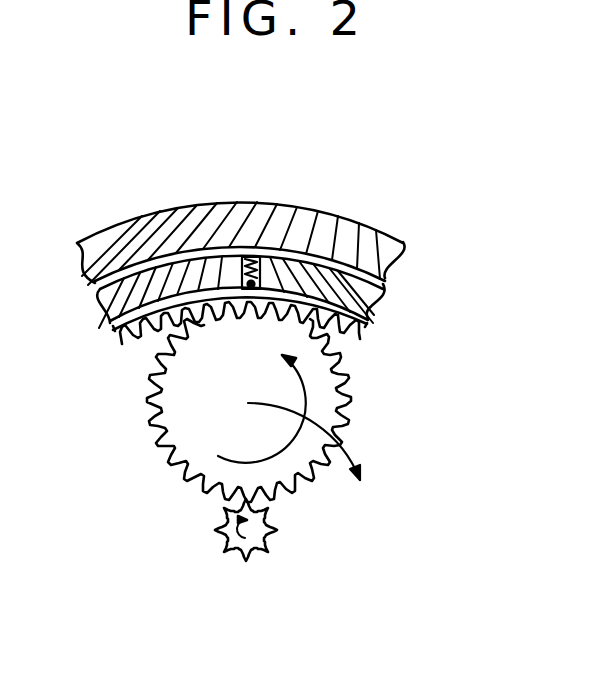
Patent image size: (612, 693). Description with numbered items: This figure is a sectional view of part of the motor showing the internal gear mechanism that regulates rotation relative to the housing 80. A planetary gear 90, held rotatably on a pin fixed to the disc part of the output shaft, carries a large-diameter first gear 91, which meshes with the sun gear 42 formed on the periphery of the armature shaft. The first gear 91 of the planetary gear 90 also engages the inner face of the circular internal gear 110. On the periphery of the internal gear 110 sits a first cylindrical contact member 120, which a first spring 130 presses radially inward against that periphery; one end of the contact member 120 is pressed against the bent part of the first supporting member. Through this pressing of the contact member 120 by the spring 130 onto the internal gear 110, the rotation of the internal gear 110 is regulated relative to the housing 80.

The sun gear 42 is at (275, 517).
The housing 80 is at (313, 228).
The planetary gear 90 is at (327, 385).
The first gear 91 is at (317, 470).
The internal gear 110 is at (355, 322).
The first contact member 120 is at (241, 282).
The first spring 130 is at (246, 264).